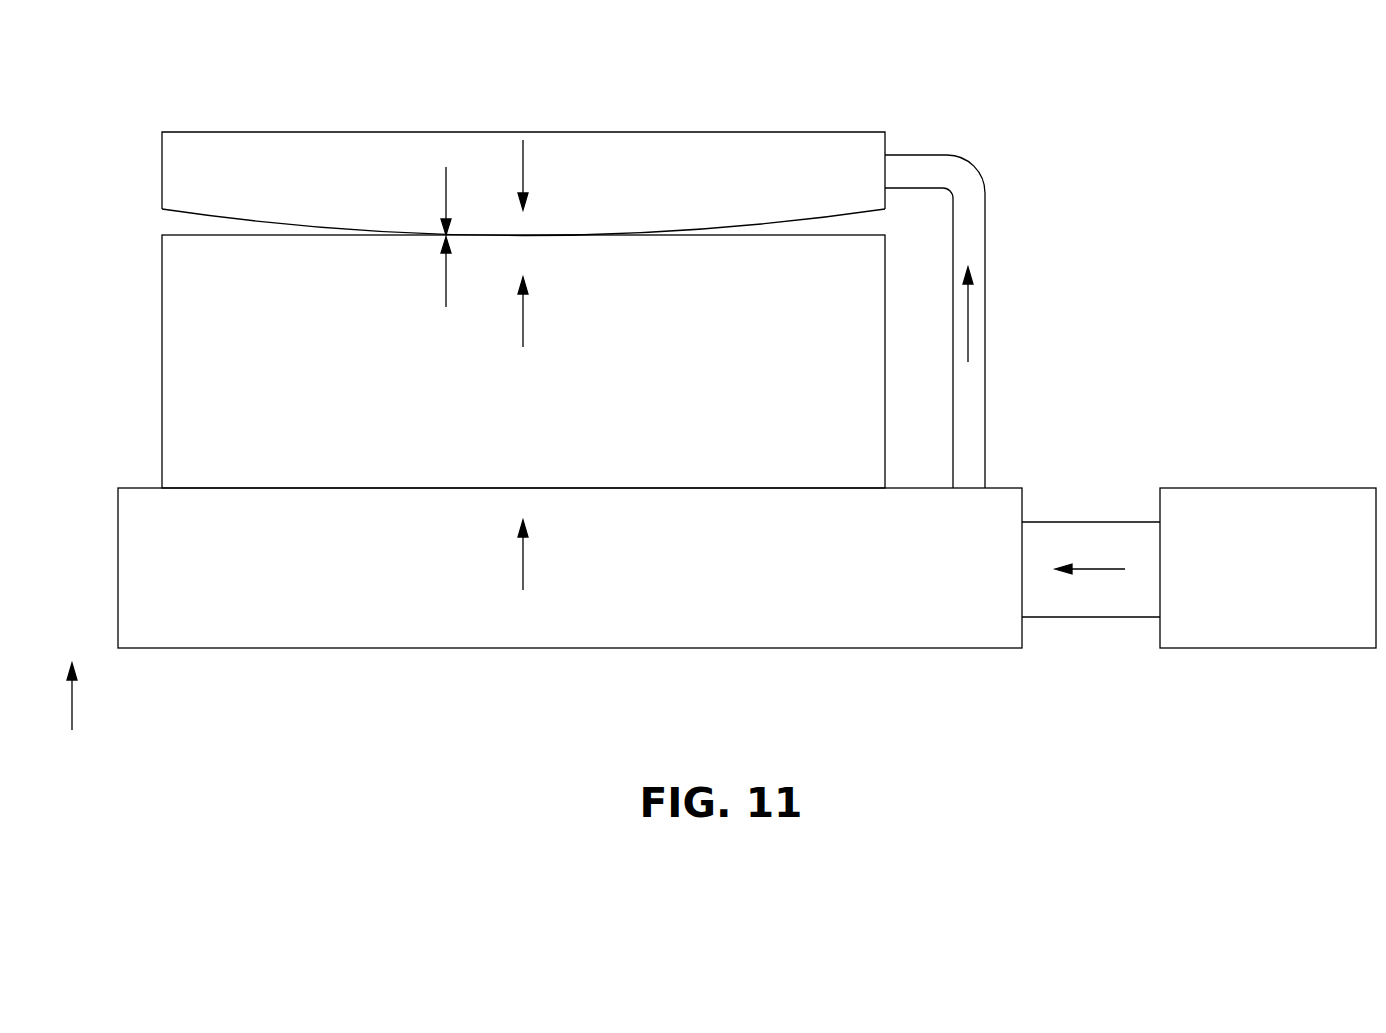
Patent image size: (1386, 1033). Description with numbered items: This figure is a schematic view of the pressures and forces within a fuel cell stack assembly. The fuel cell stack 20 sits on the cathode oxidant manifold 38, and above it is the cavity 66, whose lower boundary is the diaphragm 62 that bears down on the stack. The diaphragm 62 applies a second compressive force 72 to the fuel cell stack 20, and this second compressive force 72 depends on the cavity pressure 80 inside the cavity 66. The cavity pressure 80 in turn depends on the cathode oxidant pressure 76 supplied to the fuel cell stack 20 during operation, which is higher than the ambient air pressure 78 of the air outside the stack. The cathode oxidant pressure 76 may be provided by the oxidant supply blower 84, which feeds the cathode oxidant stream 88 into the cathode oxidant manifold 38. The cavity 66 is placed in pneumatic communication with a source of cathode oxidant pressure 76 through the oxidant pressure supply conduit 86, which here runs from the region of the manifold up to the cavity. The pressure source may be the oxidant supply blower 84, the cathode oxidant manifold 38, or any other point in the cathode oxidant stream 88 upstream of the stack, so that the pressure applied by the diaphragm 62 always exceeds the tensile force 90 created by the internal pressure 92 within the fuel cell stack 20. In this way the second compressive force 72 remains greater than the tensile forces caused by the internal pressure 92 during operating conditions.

The fuel cell stack 20 is at (172, 340).
The cathode oxidant manifold 38 is at (963, 628).
The diaphragm 62 is at (740, 227).
The cavity 66 is at (782, 153).
The second compressive force 72 is at (446, 175).
The cathode oxidant pressure 76 is at (523, 563).
The ambient air pressure 78 is at (72, 702).
The cavity pressure 80 is at (522, 148).
The oxidant supply blower 84 is at (1312, 488).
The oxidant pressure supply conduit 86 is at (985, 197).
The cathode oxidant stream 88 is at (1097, 569).
The tensile force 90 is at (446, 290).
The internal pressure 92 is at (523, 337).